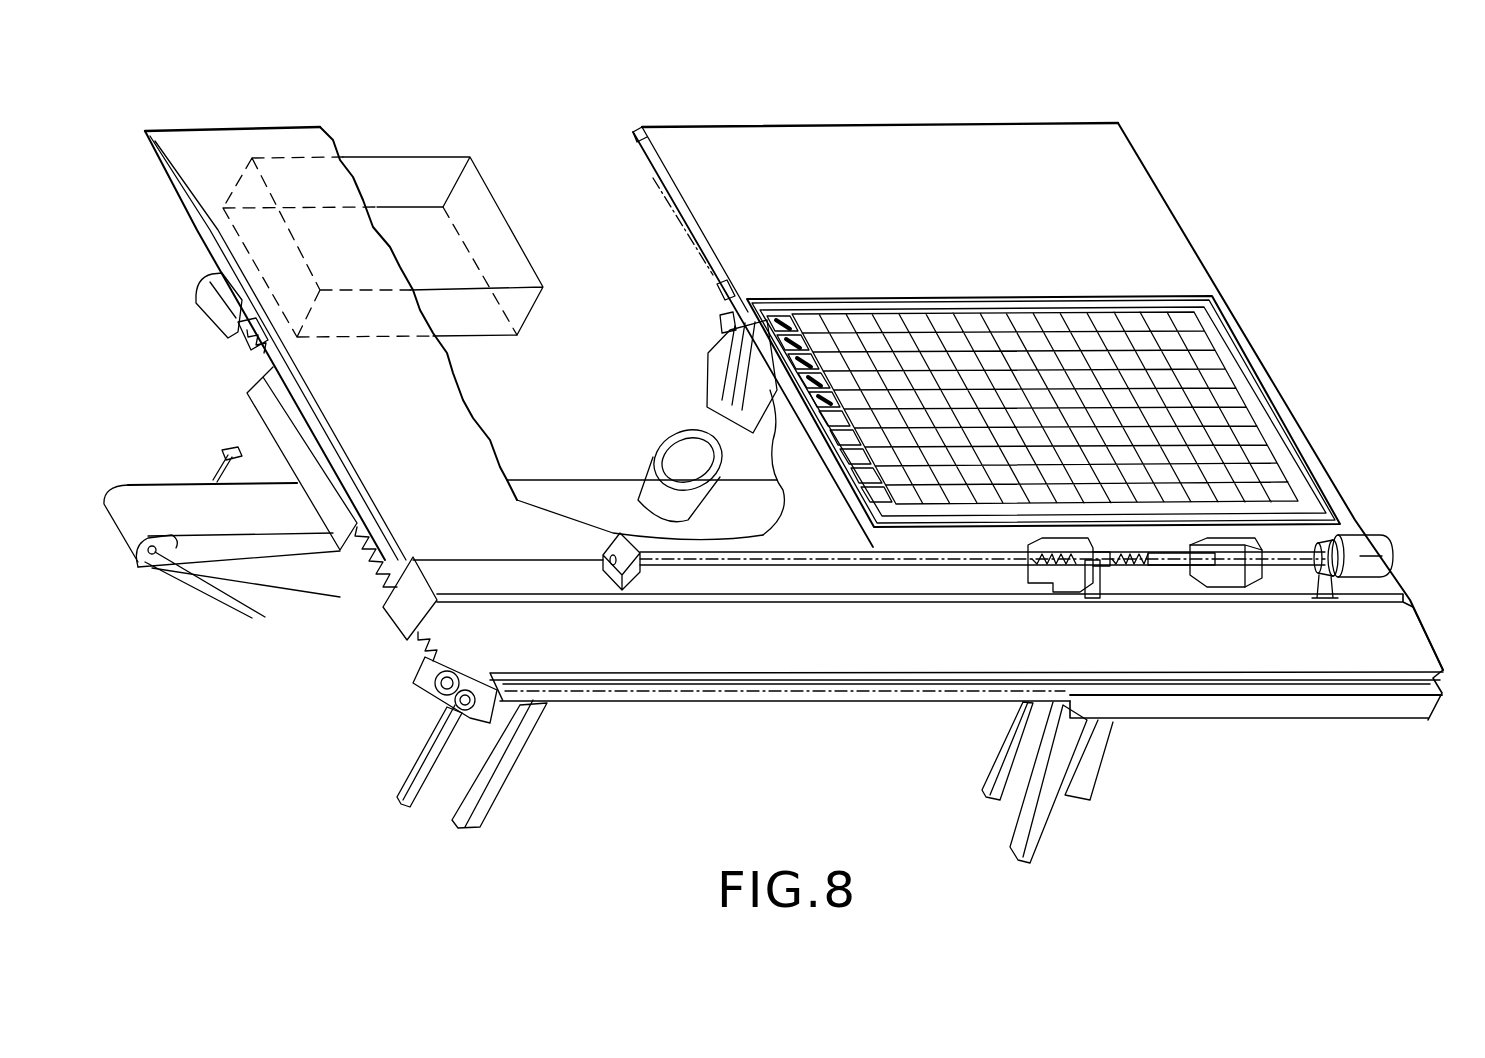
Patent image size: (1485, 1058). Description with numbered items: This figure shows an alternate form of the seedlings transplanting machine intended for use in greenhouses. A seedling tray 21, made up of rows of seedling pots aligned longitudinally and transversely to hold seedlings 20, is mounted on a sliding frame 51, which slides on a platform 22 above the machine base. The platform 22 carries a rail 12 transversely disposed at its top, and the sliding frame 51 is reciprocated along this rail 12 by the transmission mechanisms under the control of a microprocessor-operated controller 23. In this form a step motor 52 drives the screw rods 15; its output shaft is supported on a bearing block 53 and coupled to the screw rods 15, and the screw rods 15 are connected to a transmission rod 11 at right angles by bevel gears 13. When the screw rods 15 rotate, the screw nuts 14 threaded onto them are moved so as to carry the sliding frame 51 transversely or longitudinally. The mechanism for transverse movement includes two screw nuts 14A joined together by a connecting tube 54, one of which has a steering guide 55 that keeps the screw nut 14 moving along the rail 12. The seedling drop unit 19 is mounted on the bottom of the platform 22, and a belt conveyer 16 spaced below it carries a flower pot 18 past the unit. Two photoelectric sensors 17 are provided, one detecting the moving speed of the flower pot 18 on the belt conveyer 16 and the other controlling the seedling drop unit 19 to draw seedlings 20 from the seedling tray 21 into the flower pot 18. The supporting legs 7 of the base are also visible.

The leg 7 is at (1003, 777).
The transmission rod 11 is at (786, 700).
The rail 12 is at (573, 580).
The bevel gears 13 is at (433, 683).
The screw nuts 14 is at (410, 613).
The screw nuts 14A is at (1245, 577).
The screw rods 15 is at (920, 560).
The belt conveyer 16 is at (172, 507).
The photoelectric sensors 17 is at (220, 450).
The flower pot 18 is at (660, 478).
The seedling drop unit 19 is at (712, 357).
The seedlings 20 is at (787, 316).
The seedling tray 21 is at (897, 337).
The platform 22 is at (717, 158).
The microprocessor-operated controller 23 is at (465, 200).
The sliding frame 51 is at (1043, 300).
The step motor 52 is at (1360, 575).
The bearing block 53 is at (1320, 557).
The connecting tube 54 is at (1185, 560).
The steering guide 55 is at (1063, 580).